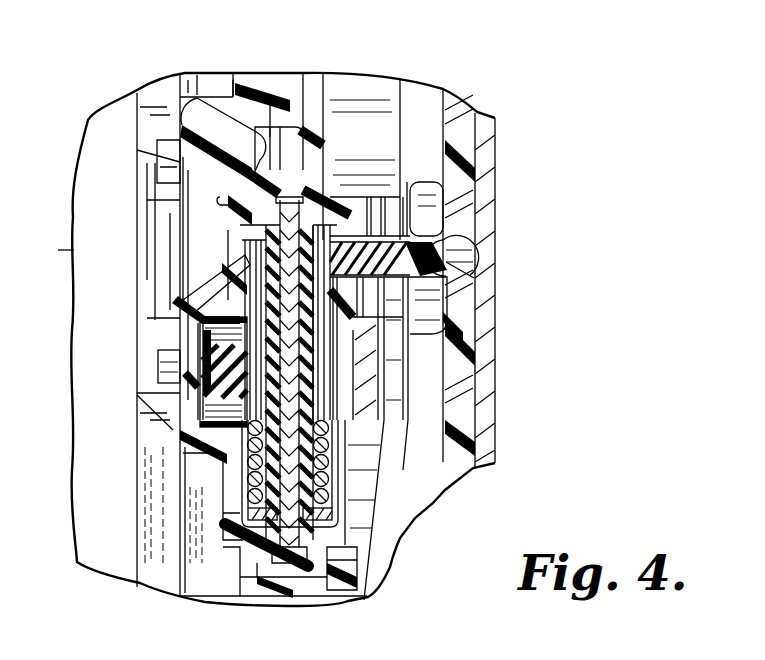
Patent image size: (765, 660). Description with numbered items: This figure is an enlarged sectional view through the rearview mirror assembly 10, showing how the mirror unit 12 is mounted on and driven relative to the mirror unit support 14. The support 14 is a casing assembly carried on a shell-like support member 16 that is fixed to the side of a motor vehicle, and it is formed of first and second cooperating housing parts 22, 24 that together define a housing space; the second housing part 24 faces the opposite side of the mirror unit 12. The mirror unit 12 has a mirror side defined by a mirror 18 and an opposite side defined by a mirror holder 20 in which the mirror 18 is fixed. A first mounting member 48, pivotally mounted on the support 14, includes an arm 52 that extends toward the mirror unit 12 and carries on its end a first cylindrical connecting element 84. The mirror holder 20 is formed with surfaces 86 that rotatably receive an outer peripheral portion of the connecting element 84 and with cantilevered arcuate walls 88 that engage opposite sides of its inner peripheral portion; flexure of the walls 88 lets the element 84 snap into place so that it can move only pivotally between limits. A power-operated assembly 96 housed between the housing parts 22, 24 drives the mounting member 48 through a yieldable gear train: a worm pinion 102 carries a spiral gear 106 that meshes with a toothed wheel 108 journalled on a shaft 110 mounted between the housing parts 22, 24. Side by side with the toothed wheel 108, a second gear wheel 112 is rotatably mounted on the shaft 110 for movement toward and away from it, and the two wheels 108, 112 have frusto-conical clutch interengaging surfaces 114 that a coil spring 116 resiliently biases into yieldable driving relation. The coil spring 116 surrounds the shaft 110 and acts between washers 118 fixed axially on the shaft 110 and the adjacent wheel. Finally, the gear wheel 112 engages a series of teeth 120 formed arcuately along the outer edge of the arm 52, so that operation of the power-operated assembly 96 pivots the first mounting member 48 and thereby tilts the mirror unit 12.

The rearview mirror assembly 10 is at (438, 65).
The mirror unit 12 is at (497, 152).
The mirror unit support 14 is at (137, 497).
The support member 16 is at (49, 232).
The mirror 18 is at (478, 253).
The mirror holder 20 is at (467, 386).
The first housing part 22 is at (190, 334).
The second housing part 24 is at (345, 487).
The first mounting member 48 is at (383, 238).
The arm 52 is at (345, 215).
The first cylindrical connecting element 84 is at (455, 275).
The surfaces 86 is at (455, 262).
The cantilevered arcuate walls 88 is at (425, 285).
The power-operated assembly 96 is at (191, 413).
The worm pinion 102 is at (200, 373).
The spiral gear 106 is at (335, 384).
The toothed wheel 108 is at (335, 364).
The shaft 110 is at (343, 537).
The second gear wheel 112 is at (240, 225).
The frusto-conical clutch interengaging surfaces 114 is at (313, 327).
The coil spring 116 is at (338, 467).
The washers 118 is at (243, 510).
The series of teeth 120 is at (257, 255).